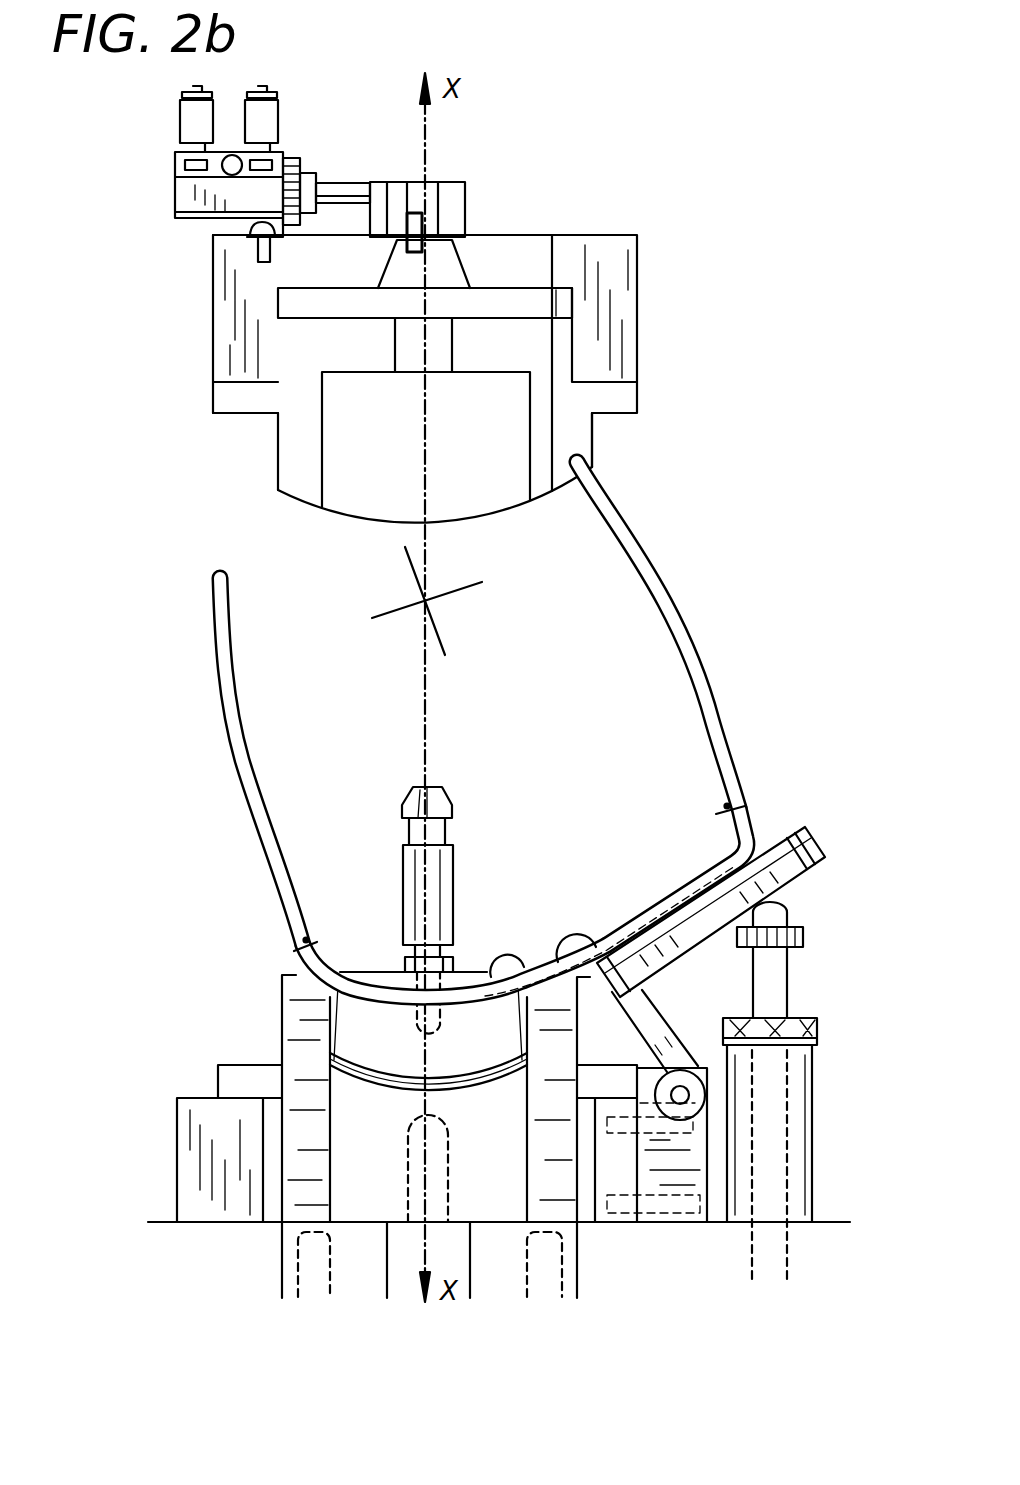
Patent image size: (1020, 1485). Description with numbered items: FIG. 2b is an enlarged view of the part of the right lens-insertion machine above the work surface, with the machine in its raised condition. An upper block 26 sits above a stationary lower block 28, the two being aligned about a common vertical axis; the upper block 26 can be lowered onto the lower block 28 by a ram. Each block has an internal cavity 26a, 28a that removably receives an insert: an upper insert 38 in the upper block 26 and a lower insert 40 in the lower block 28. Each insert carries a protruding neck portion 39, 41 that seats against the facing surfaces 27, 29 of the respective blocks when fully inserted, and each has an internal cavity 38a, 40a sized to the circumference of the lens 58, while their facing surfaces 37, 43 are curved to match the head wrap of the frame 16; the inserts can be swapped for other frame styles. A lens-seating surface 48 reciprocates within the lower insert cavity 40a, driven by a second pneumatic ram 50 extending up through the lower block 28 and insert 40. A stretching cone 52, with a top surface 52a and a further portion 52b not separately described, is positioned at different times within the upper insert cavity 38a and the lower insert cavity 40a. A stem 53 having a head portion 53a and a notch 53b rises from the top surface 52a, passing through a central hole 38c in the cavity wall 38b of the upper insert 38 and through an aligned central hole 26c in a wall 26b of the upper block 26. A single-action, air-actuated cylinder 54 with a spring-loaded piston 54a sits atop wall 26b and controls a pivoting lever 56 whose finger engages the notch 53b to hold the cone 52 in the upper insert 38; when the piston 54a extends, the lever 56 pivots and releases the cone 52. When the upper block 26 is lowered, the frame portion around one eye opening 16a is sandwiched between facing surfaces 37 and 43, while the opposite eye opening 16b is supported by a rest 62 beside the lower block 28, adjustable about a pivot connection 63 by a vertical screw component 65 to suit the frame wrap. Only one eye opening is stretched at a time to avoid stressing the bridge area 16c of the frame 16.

The frame 16 is at (253, 830).
The eye opening 16a is at (375, 990).
The opposite eye opening 16b is at (705, 872).
The bridge area 16c is at (543, 955).
The upper block 26 is at (627, 312).
The internal cavity of upper block 26a is at (546, 303).
The wall of upper block 26b is at (500, 248).
The central hole 26c is at (455, 280).
The facing surface of upper block 27 is at (235, 360).
The lower block 28 is at (180, 1130).
The internal cavity of lower block 28a is at (277, 1163).
The facing surface of lower block 29 is at (178, 1098).
The facing surface of upper insert 37 is at (285, 497).
The upper insert 38 is at (588, 440).
The internal cavity of upper insert 38a is at (358, 478).
The cavity wall 38b is at (478, 373).
The central hole 38c is at (415, 352).
The neck portion 39 is at (248, 402).
The lower insert 40 is at (305, 1013).
The internal cavity of lower insert 40a is at (300, 988).
The neck portion 41 is at (245, 1078).
The facing surface of lower insert 43 is at (290, 975).
The lens-seating surface 48 is at (455, 1087).
The second pneumatic ram 50 is at (465, 1272).
The stretching cone 52 is at (512, 1028).
The top surface of stretching cone 52a is at (470, 965).
The holder side 52b is at (330, 1040).
The stem 53 is at (447, 888).
The head portion 53a is at (440, 790).
The notch 53b is at (455, 845).
The air-actuated cylinder 54 is at (300, 162).
The spring-loaded piston 54a is at (330, 185).
The pivoting lever 56 is at (398, 213).
The lens 58 is at (405, 1087).
The rest 62 is at (776, 843).
The pivot connection 63 is at (688, 1068).
The vertical screw component 65 is at (803, 932).